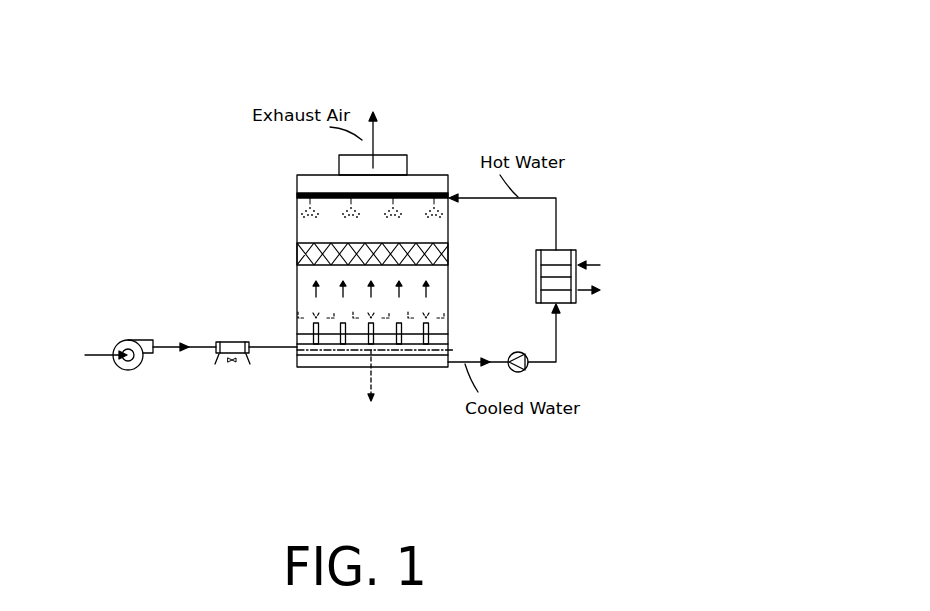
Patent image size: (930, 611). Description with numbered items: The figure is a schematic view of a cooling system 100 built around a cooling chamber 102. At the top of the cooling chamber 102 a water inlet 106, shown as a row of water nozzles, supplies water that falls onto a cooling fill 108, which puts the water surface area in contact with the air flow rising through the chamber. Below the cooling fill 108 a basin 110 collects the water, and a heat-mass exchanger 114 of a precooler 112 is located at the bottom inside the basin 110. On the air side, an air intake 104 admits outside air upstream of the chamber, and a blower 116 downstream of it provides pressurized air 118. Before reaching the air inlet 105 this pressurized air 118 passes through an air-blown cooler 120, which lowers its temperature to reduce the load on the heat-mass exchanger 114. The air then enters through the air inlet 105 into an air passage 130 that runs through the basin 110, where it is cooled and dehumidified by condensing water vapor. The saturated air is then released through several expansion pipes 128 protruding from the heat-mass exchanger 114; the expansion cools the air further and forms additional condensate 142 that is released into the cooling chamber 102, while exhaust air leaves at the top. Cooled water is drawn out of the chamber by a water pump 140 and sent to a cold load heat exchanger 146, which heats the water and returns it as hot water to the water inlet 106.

The cooling system 100 is at (438, 77).
The cooling chamber 102 is at (297, 275).
The air intake 104 is at (93, 357).
The air inlet 105 is at (293, 348).
The water inlet 106 is at (297, 200).
The cooling fill 108 is at (442, 258).
The basin 110 is at (330, 360).
The precooler 112 is at (390, 372).
The heat-mass exchanger 114 is at (403, 357).
The blower 116 is at (117, 343).
The pressurized air 118 is at (165, 348).
The air-blown cooler 120 is at (213, 355).
The expansion pipe 128 is at (313, 328).
The air passage 130 is at (296, 348).
The water pump 140 is at (517, 372).
The condensate 142 is at (305, 314).
The cold load heat exchanger 146 is at (570, 250).